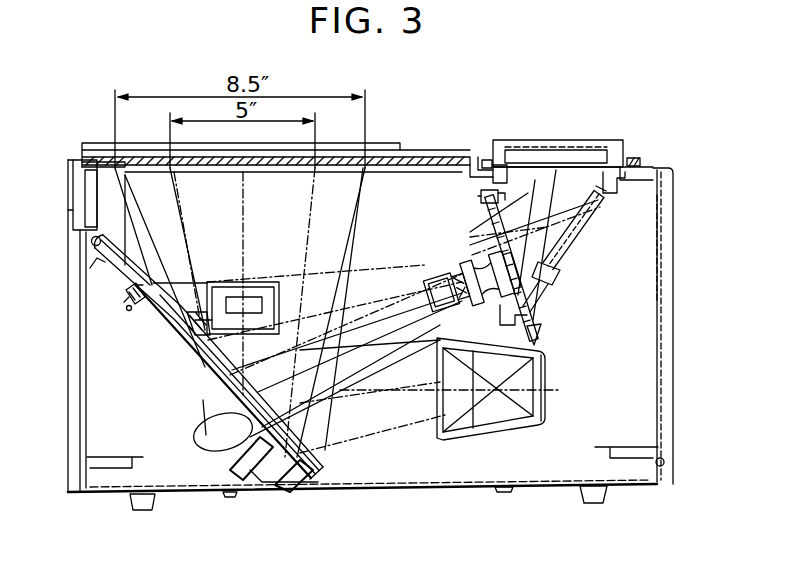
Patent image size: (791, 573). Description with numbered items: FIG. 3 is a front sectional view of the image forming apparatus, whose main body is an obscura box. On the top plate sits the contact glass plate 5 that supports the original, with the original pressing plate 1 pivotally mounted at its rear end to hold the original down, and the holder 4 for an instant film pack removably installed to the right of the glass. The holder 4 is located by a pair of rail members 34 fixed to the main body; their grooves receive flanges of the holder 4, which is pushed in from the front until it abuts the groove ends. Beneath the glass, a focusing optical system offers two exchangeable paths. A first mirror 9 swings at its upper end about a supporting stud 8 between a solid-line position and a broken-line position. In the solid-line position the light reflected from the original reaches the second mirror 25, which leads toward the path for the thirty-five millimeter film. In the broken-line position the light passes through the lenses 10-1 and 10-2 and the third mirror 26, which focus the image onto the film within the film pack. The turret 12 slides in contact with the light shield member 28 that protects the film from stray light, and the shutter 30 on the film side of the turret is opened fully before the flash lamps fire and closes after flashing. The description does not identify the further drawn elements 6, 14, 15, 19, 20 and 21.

The original pressing plate 1 is at (375, 140).
The holder for instant film pack 4 is at (567, 138).
The contact glass plate 5 is at (138, 157).
The knob 6 is at (203, 450).
The supporting stud 8 is at (88, 252).
The first mirror 9 is at (178, 330).
The lens 10-1 is at (425, 280).
The lens 10-2 is at (440, 268).
The turret 12 is at (502, 188).
The mirror 14 is at (208, 370).
The clamp 15 is at (133, 298).
The mirror 19 is at (270, 490).
The mirror 20 is at (240, 473).
The mirror 21 is at (263, 473).
The second mirror 25 is at (527, 433).
The third mirror 26 is at (657, 193).
The light shield member 28 is at (537, 327).
The shutter 30 is at (505, 253).
The rail member 34 is at (486, 160).